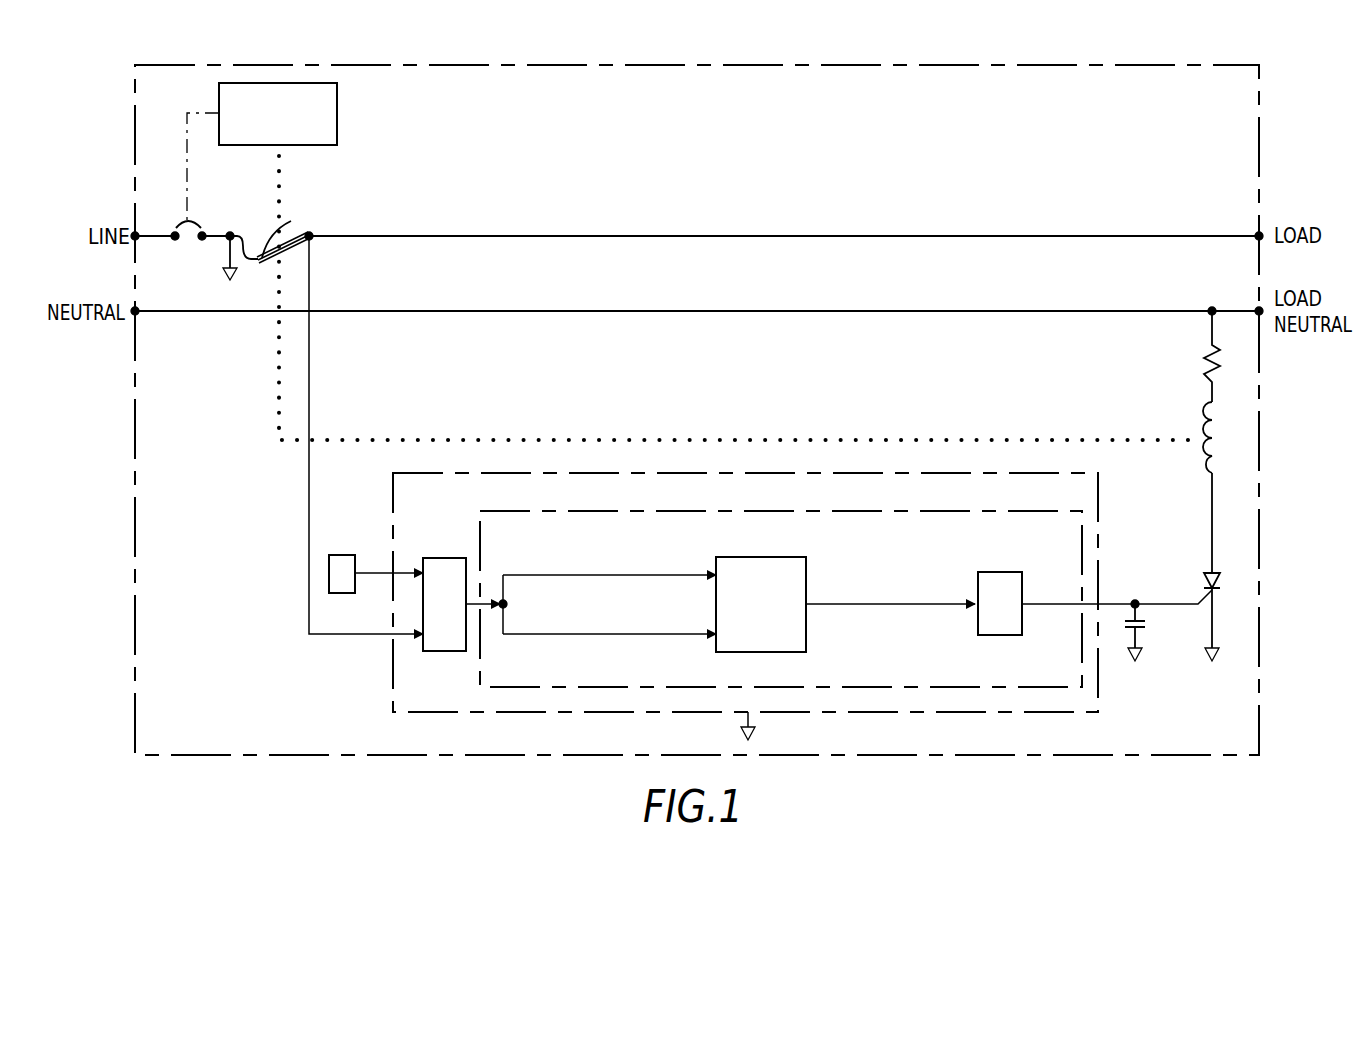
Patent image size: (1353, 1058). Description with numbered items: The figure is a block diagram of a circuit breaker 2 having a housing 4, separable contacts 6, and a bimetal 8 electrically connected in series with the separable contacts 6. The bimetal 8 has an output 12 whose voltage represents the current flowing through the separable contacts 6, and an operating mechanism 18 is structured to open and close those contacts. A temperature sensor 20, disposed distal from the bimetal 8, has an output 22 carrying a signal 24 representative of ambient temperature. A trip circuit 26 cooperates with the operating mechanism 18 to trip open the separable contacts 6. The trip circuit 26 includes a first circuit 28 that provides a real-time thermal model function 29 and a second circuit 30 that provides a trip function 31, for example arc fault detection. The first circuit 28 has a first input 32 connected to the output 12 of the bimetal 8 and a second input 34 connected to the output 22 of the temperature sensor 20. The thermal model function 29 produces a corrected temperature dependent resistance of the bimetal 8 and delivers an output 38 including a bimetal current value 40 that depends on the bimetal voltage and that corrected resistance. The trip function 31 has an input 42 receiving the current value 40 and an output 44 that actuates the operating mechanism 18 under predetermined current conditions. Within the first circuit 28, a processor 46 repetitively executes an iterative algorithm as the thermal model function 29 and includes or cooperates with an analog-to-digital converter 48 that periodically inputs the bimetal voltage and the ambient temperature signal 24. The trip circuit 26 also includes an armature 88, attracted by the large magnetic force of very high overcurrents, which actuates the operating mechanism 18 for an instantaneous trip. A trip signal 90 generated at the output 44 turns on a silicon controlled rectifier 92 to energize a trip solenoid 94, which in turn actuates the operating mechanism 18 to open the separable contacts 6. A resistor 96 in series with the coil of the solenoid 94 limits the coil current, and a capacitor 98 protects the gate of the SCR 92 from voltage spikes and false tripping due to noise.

The circuit breaker 2 is at (174, 806).
The housing 4 is at (135, 694).
The separable contacts 6 is at (184, 224).
The bimetal 8 is at (263, 266).
The output 12 is at (310, 234).
The operating mechanism 18 is at (337, 112).
The temperature sensor 20 is at (340, 553).
The output 22 is at (357, 572).
The signal 24 is at (379, 576).
The trip circuit 26 is at (247, 331).
The first circuit 28 is at (446, 547).
The real-time thermal model function 29 is at (791, 557).
The second circuit 30 is at (985, 567).
The trip function 31 is at (990, 637).
The first input 32 is at (421, 640).
The second input 34 is at (421, 570).
The output 38 is at (806, 606).
The bimetal current value 40 is at (864, 606).
The input 42 is at (975, 606).
The output 44 is at (1022, 606).
The processor 46 is at (1068, 688).
The analog-to-digital converter 48 is at (441, 652).
The armature 88 is at (270, 233).
The trip signal 90 is at (1130, 601).
The silicon controlled rectifier 92 is at (1201, 584).
The trip solenoid 94 is at (1205, 468).
The resistor 96 is at (1202, 353).
The capacitor 98 is at (1147, 628).